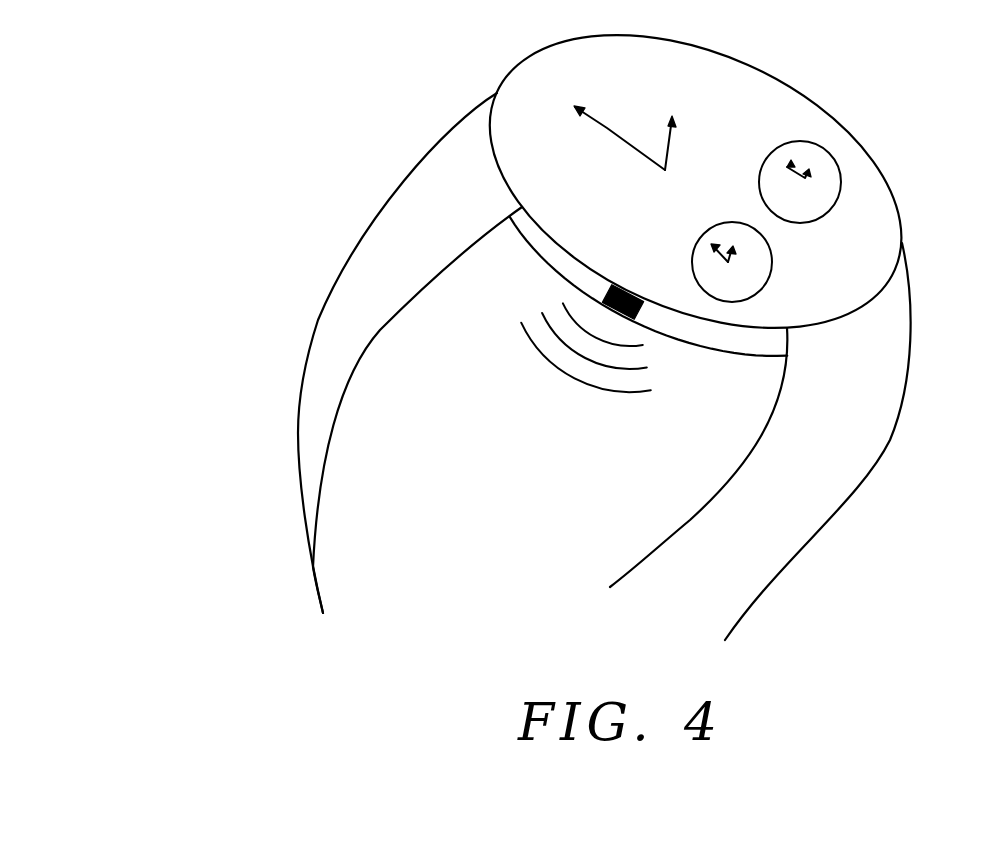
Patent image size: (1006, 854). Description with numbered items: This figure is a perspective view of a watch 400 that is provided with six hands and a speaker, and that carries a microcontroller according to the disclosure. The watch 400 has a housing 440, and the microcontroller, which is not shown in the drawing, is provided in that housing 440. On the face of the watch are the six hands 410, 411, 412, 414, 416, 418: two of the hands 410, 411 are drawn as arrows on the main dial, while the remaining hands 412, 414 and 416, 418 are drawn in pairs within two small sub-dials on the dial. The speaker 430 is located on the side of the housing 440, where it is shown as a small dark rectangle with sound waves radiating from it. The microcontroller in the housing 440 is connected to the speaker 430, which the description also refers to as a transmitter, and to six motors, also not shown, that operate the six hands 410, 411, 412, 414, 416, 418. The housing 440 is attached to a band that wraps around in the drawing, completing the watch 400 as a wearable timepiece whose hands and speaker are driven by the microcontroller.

The watch 400 is at (238, 413).
The hand 410 is at (607, 128).
The hand 411 is at (672, 138).
The hand 412 is at (787, 167).
The hand 414 is at (808, 171).
The hand 416 is at (733, 250).
The hand 418 is at (724, 256).
The speaker 430 is at (590, 288).
The housing 440 is at (713, 337).